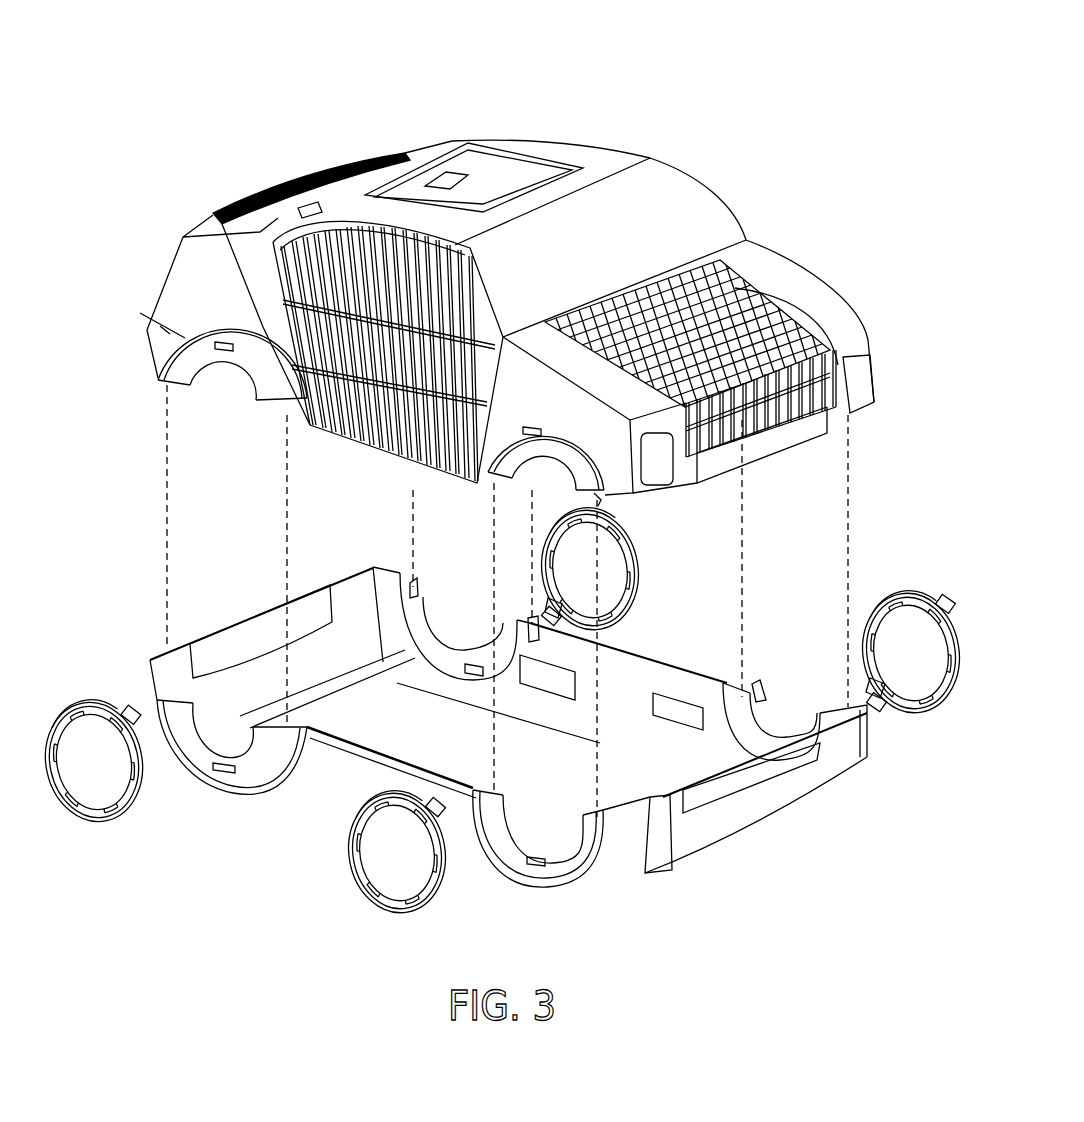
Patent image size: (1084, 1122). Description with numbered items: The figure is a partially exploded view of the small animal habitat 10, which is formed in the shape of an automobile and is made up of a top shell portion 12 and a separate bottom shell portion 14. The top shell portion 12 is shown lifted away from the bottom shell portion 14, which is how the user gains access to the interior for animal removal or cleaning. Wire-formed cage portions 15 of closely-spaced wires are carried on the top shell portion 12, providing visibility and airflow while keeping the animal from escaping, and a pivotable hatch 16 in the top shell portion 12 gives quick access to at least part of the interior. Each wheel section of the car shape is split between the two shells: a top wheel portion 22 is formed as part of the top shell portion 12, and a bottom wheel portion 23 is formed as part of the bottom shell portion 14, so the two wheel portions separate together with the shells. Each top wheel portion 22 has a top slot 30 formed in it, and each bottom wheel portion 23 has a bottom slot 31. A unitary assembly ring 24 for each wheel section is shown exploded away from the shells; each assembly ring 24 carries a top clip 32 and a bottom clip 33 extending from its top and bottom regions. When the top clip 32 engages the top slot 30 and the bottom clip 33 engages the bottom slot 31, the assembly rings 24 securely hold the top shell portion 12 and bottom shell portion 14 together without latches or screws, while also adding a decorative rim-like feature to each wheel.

The small animal habitat 10 is at (212, 115).
The top shell portion 12 is at (688, 190).
The bottom shell portion 14 is at (312, 792).
The cage portion 15 is at (745, 280).
The pivotable hatch 16 is at (505, 176).
The top wheel portion 22 is at (163, 331).
The bottom wheel portion 23 is at (188, 769).
The assembly ring 24 is at (90, 702).
The top slot 30 is at (221, 341).
The bottom slot 31 is at (222, 773).
The top clip 32 is at (121, 736).
The bottom clip 33 is at (555, 600).